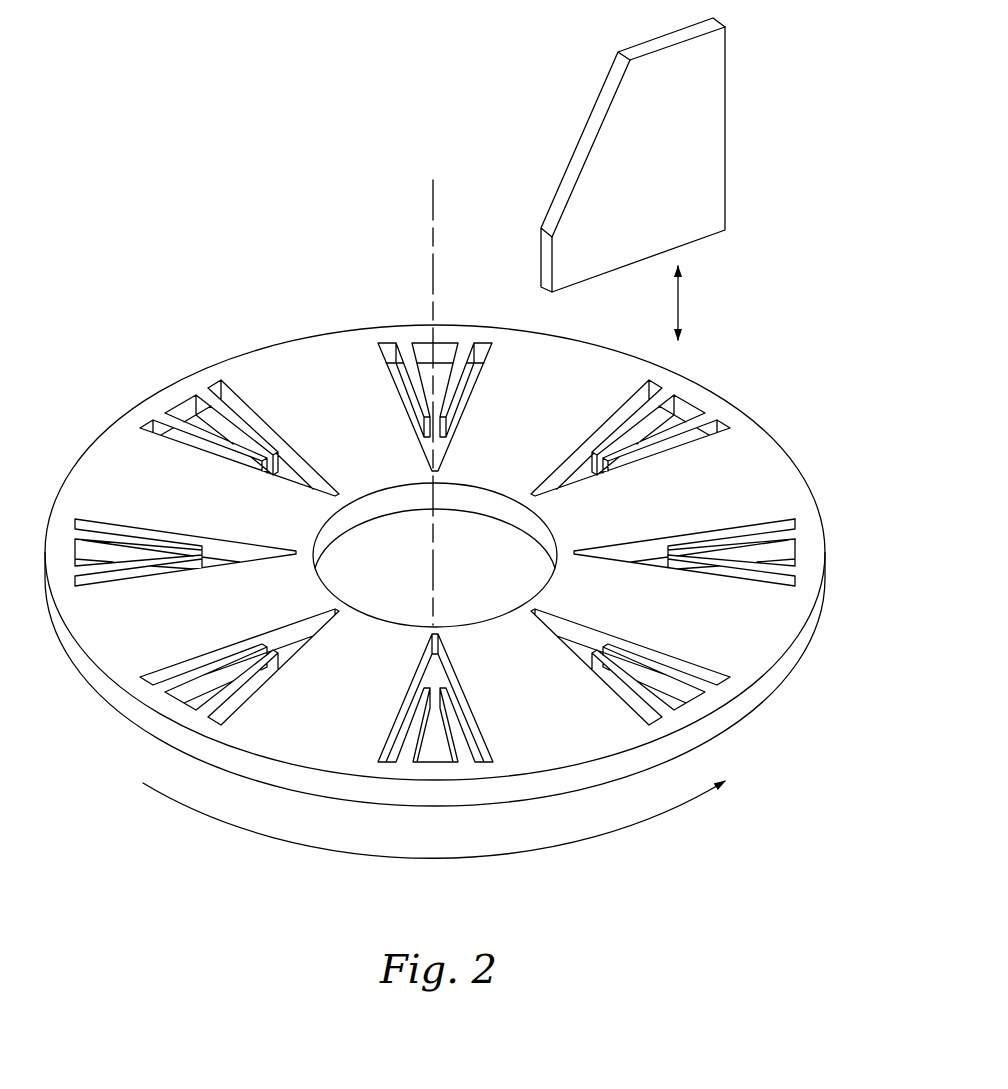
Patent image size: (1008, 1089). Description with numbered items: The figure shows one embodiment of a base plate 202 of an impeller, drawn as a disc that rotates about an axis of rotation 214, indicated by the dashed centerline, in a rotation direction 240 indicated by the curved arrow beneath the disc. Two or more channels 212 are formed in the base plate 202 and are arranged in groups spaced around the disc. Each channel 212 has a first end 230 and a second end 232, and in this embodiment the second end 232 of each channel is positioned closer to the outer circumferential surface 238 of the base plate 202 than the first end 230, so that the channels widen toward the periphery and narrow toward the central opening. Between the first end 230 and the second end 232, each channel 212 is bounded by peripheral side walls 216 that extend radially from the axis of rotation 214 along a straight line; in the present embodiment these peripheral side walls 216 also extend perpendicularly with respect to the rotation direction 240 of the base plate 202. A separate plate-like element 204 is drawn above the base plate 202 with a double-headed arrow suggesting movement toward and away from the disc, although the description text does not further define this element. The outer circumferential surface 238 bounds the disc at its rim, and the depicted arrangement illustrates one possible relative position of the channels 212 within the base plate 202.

The base plate 202 is at (188, 298).
The polishing head plate 204 is at (683, 181).
The channels 212 is at (598, 652).
The axis of rotation 214 is at (412, 266).
The peripheral side walls 216 is at (232, 554).
The first end 230 is at (573, 556).
The second end 232 is at (793, 530).
The outer circumferential surface 238 is at (798, 654).
The rotation direction 240 is at (437, 859).